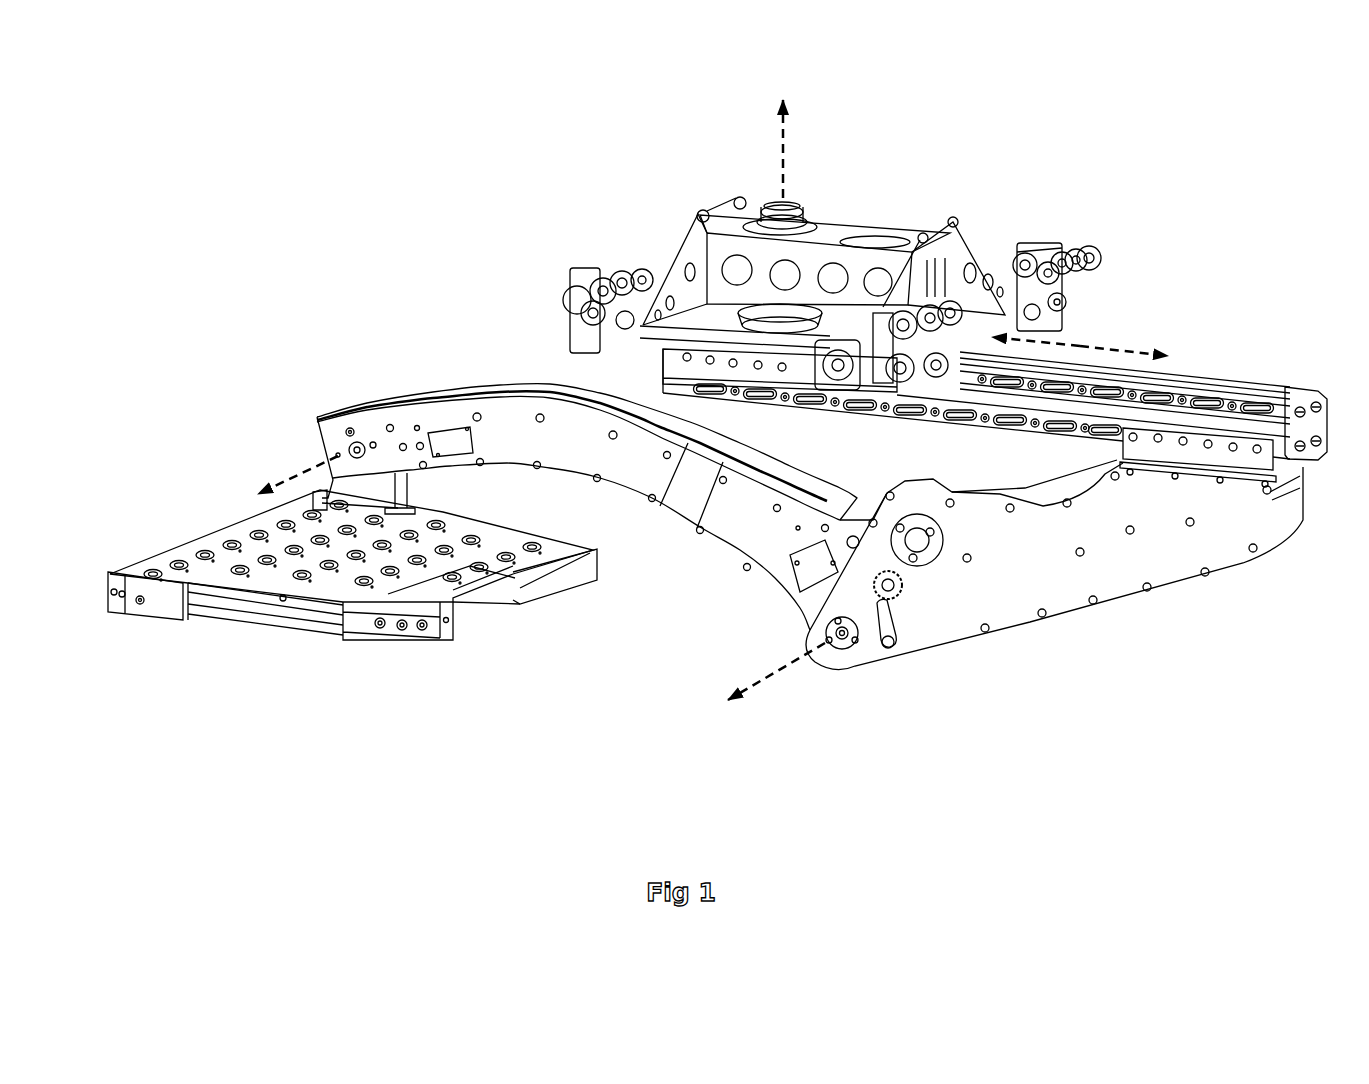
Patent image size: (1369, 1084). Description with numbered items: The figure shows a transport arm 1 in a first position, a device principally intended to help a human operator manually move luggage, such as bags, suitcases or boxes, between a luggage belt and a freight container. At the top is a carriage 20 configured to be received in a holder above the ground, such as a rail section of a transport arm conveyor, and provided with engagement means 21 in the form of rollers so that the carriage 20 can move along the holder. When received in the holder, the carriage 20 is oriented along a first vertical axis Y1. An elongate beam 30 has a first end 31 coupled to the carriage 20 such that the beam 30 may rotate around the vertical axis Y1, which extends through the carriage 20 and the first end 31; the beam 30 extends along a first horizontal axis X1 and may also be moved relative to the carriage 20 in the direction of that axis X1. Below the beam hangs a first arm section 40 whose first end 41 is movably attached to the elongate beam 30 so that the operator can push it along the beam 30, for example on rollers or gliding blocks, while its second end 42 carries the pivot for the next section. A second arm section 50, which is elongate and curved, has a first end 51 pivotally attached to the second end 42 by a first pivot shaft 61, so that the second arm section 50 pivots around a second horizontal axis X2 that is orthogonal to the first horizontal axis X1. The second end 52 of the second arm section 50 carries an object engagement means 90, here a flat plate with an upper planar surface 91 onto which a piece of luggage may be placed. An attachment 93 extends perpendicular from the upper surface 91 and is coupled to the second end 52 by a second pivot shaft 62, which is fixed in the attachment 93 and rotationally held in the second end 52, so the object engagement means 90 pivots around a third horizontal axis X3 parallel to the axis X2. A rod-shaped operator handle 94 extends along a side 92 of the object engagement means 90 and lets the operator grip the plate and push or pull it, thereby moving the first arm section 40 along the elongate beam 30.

The transport arm 1 is at (280, 219).
The carriage 20 is at (680, 225).
The engagement means 21 is at (1096, 238).
The elongate beam 30 is at (1204, 358).
The first end of the beam 31 is at (645, 368).
The first arm section 40 is at (1108, 622).
The first end of the first arm section 41 is at (1230, 486).
The second end of the first arm section 42 is at (873, 622).
The second arm section 50 is at (657, 543).
The first end of the second arm section 51 is at (801, 602).
The second end of the second arm section 52 is at (330, 394).
The first pivot shaft 61 is at (850, 659).
The second pivot shaft 62 is at (339, 440).
The object engagement means 90 is at (192, 481).
The upper planar surface 91 is at (215, 552).
The side of the object engagement means 92 is at (158, 607).
The attachment 93 is at (393, 494).
The operator handle 94 is at (244, 619).
The first vertical axis Y1 is at (829, 149).
The first horizontal axis X1 is at (1080, 328).
The second horizontal axis X2 is at (780, 694).
The third horizontal axis X3 is at (281, 470).